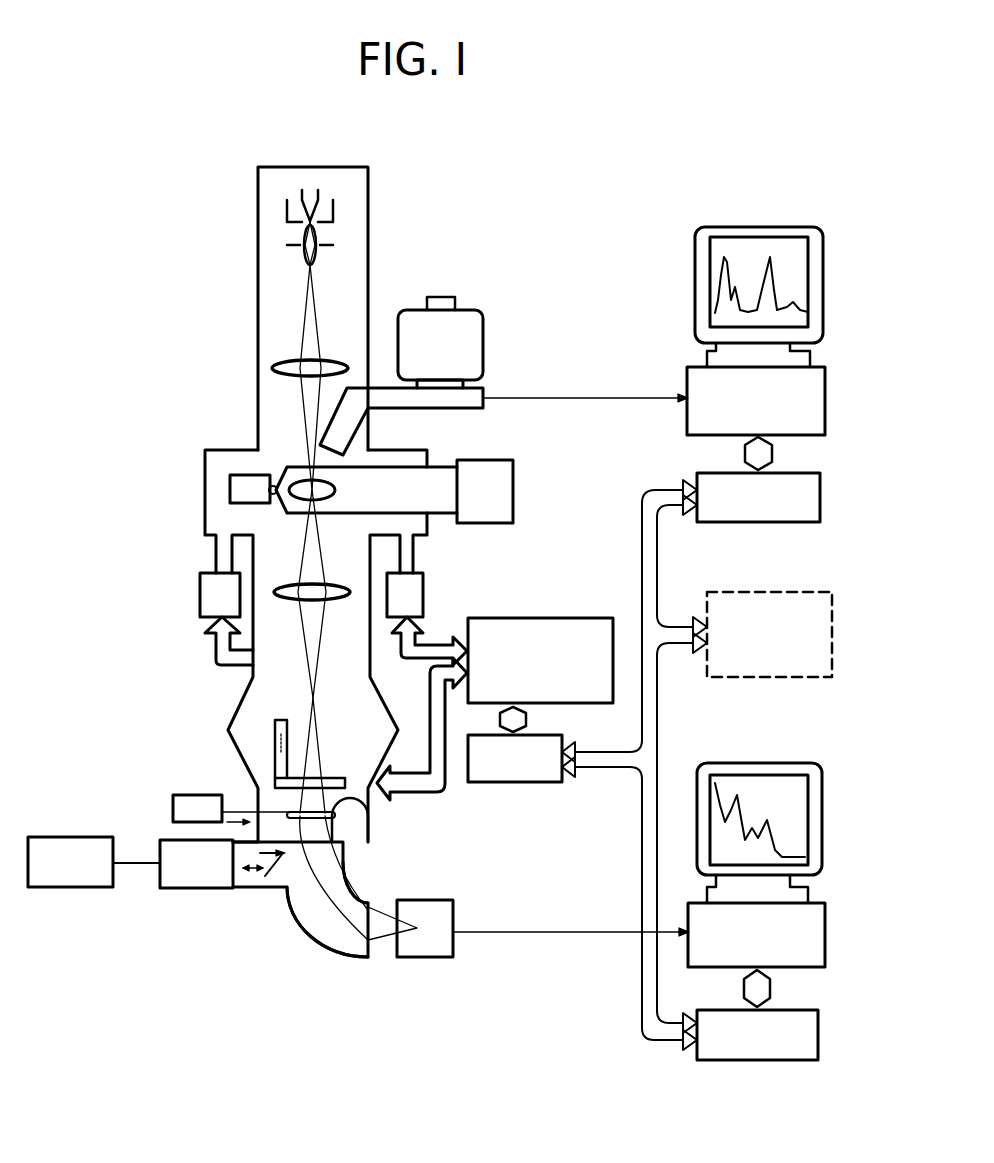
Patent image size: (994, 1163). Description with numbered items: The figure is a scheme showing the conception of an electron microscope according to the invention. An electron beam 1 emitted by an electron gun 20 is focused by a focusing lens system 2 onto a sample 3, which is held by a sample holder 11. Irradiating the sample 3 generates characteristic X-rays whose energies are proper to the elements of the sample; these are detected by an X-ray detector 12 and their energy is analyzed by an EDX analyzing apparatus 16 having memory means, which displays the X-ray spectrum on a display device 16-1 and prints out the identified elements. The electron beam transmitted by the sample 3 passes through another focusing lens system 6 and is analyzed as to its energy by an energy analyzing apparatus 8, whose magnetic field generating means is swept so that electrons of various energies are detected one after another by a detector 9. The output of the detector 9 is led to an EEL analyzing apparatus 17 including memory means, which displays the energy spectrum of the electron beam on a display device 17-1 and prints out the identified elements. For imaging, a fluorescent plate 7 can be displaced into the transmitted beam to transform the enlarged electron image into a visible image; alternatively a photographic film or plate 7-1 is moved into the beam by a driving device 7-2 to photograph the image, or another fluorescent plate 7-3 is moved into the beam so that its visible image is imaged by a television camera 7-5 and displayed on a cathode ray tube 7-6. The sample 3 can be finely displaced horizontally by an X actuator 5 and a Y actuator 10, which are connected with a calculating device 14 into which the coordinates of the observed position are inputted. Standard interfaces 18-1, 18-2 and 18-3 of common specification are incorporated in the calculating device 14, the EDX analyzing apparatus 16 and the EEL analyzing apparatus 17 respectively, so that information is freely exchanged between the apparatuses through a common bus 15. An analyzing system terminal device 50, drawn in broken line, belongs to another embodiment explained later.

The electron beam 1 is at (305, 307).
The focusing lens system 2 is at (275, 352).
The sample 3 is at (298, 480).
The X actuator 5 is at (200, 597).
The focusing lens system 6 is at (282, 598).
The fluorescent plate 7 is at (260, 788).
The photographic film or photographic plate 7-1 is at (368, 820).
The driving device 7-2 is at (173, 812).
The fluorescent plate 7-3 is at (288, 848).
The television camera 7-5 is at (195, 888).
The cathode ray tube 7-6 is at (73, 888).
The energy analyzing apparatus 8 is at (313, 938).
The detector 9 is at (427, 958).
The Y actuator 10 is at (423, 592).
The sample holder 11 is at (473, 524).
The X-ray detector 12 is at (418, 308).
The calculating device 14 is at (543, 618).
The common bus 15 is at (643, 535).
The EDX analyzing apparatus 16 is at (702, 367).
The display device 16-1 is at (823, 267).
The EEL analyzing apparatus 17 is at (808, 903).
The display device 17-1 is at (822, 807).
The standard interface 18-1 is at (545, 783).
The standard interface 18-2 is at (820, 490).
The standard interface 18-3 is at (795, 1062).
The electron gun 20 is at (328, 212).
The analyzing system terminal device 50 is at (775, 592).